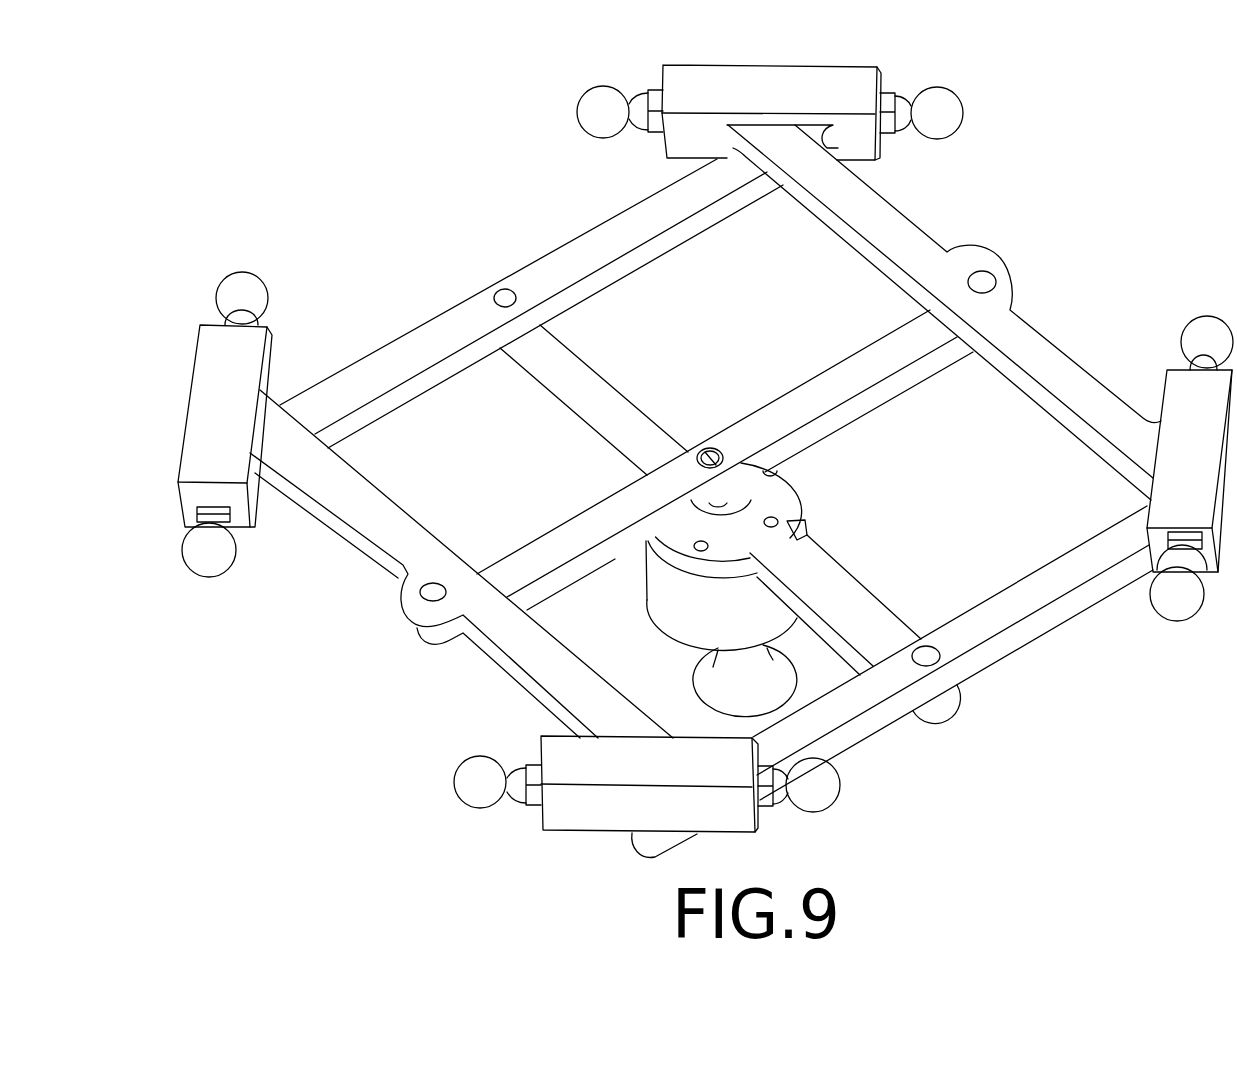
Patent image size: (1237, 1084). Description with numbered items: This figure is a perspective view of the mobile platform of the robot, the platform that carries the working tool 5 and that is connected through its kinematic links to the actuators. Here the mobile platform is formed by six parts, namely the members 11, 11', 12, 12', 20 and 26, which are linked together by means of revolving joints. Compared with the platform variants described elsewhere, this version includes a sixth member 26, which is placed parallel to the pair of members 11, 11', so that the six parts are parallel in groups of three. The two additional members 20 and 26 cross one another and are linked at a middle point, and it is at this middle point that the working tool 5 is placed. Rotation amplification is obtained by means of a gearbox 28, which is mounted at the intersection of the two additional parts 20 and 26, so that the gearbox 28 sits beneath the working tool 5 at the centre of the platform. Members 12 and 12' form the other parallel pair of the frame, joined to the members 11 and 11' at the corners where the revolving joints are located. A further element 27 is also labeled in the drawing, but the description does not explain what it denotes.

The working tool 5 is at (720, 690).
The member 11 is at (461, 564).
The member 11' is at (944, 312).
The member 12 is at (953, 653).
The member 12' is at (531, 317).
The additional member 20 is at (870, 372).
The sixth member 26 is at (875, 637).
The arm 27 is at (878, 590).
The gearbox 28 is at (672, 607).